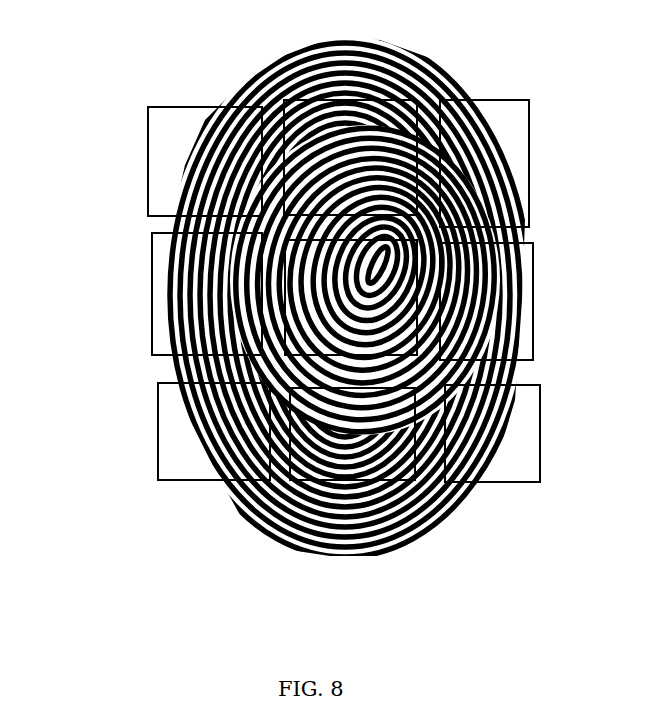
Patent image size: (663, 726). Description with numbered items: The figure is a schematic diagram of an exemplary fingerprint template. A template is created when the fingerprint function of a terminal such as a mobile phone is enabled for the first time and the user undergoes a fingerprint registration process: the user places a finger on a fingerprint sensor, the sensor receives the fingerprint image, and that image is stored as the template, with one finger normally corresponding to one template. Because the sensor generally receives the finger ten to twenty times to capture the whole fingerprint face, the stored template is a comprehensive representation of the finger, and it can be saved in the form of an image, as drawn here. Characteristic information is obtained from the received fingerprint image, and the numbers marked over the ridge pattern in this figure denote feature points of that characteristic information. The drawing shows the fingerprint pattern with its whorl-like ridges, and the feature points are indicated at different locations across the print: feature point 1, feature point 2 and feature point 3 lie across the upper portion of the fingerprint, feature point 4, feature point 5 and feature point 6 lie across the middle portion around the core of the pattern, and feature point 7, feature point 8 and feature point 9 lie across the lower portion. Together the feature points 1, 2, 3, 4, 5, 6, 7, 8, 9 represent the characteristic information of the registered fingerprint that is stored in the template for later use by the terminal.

The feature point 1 is at (148, 170).
The feature point 2 is at (327, 83).
The feature point 3 is at (531, 162).
The feature point 4 is at (153, 308).
The feature point 5 is at (420, 483).
The feature point 6 is at (538, 315).
The feature point 7 is at (160, 432).
The feature point 8 is at (345, 478).
The feature point 9 is at (546, 445).